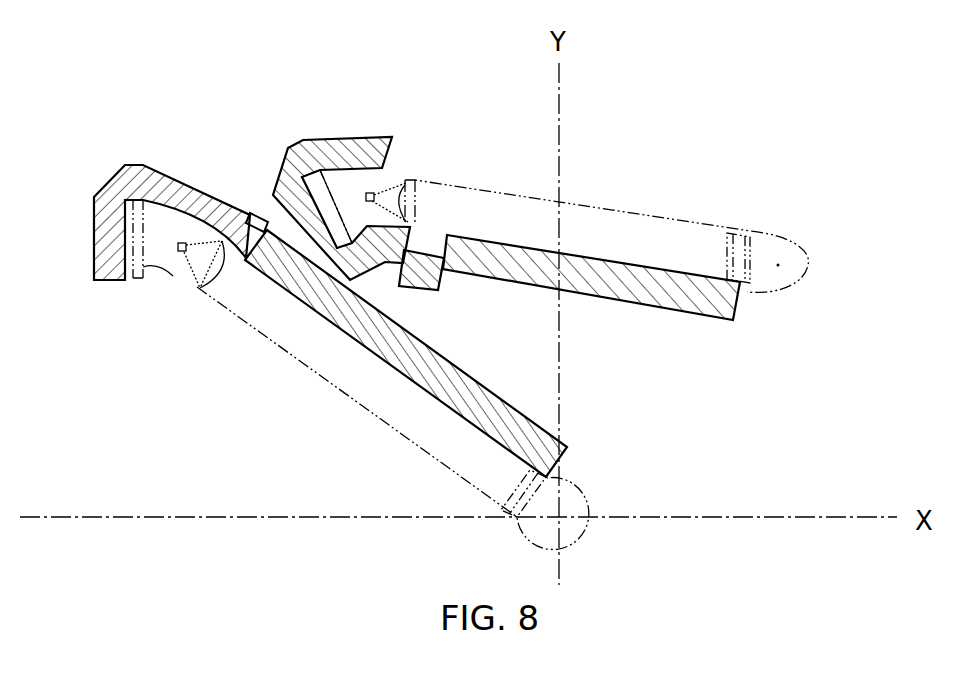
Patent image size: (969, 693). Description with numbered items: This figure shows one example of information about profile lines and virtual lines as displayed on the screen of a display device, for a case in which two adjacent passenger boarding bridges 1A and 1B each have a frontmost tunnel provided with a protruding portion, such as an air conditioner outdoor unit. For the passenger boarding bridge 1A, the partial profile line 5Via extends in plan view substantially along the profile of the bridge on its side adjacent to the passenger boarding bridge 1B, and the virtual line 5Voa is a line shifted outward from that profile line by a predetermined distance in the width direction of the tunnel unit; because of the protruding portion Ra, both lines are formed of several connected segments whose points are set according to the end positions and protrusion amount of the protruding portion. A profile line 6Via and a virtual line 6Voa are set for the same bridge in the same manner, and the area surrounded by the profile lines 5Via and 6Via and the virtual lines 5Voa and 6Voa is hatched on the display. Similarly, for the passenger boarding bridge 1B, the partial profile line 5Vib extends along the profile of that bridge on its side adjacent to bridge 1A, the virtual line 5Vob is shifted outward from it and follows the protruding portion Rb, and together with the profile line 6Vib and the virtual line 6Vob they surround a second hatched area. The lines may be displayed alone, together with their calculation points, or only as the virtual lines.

The virtual line 6Voa is at (107, 180).
The profile line 6Via is at (123, 247).
The protruding portion Ra is at (263, 210).
The virtual line 6Vob is at (318, 137).
The profile line 6Vib is at (347, 170).
The passenger boarding bridge 1A is at (277, 352).
The passenger boarding bridge 1B is at (586, 202).
The partial profile line 5Vib is at (660, 270).
The virtual line 5Vob is at (615, 303).
The protruding portion Rb is at (425, 293).
The virtual line 5Voa is at (527, 414).
The partial profile line 5Via is at (457, 413).